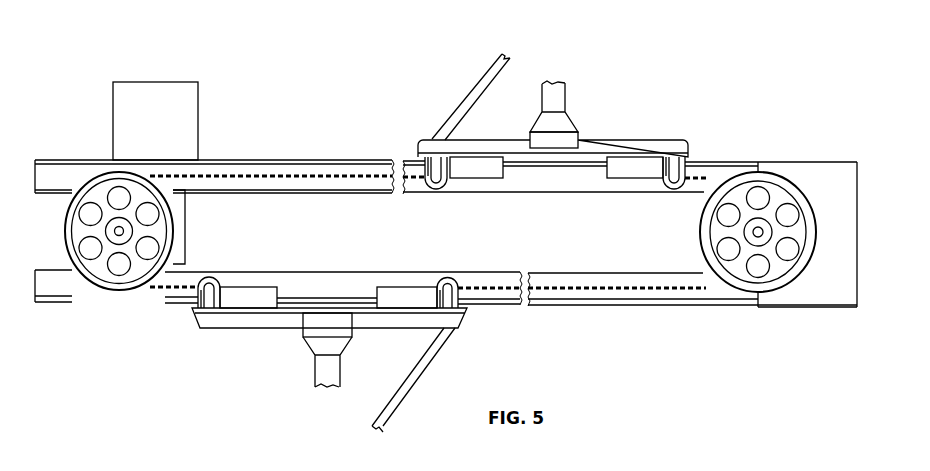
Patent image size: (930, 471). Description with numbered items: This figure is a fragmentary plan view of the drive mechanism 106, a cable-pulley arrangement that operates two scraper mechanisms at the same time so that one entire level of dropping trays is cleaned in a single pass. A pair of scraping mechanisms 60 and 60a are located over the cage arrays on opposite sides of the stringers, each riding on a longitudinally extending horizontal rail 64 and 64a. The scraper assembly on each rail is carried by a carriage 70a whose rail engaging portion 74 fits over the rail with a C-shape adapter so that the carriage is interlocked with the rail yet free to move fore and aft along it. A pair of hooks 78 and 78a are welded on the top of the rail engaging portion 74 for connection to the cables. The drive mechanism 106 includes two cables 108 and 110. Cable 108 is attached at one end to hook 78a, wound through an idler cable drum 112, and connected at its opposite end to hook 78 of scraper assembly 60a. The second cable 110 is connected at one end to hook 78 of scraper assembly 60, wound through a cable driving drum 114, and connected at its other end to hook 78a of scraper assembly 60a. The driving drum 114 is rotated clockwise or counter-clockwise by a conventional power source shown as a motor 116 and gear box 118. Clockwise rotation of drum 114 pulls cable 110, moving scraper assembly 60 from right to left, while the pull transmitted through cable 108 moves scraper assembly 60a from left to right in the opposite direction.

The drive mechanism 106 is at (708, 80).
The scraping mechanism 60 is at (495, 270).
The scraping mechanism 60a is at (587, 97).
The rail 64 is at (642, 305).
The rail 64a is at (248, 162).
The carriage 70a is at (637, 147).
The rail engaging portion 74 is at (490, 172).
The hook 78 is at (672, 187).
The hook 78a is at (437, 182).
The cable 108 is at (603, 285).
The cable 110 is at (287, 173).
The idler cable drum 112 is at (788, 187).
The cable driving drum 114 is at (92, 185).
The motor 116 is at (160, 93).
The gear box 118 is at (187, 208).